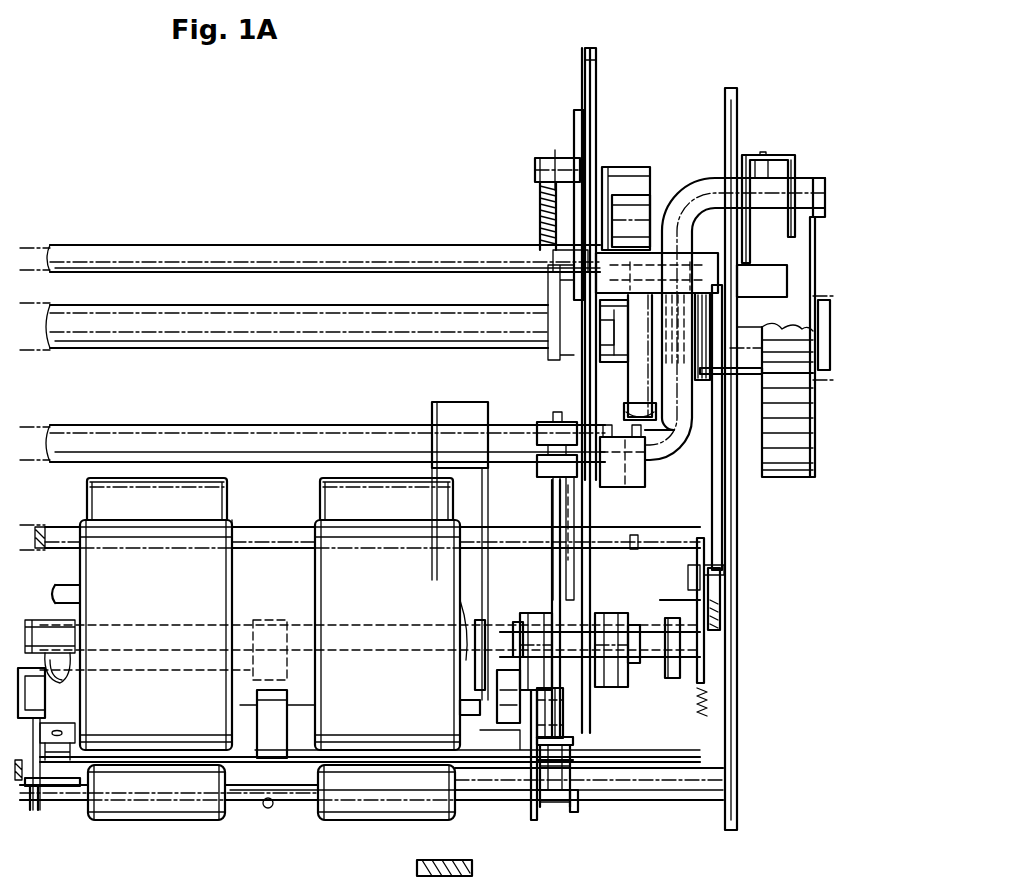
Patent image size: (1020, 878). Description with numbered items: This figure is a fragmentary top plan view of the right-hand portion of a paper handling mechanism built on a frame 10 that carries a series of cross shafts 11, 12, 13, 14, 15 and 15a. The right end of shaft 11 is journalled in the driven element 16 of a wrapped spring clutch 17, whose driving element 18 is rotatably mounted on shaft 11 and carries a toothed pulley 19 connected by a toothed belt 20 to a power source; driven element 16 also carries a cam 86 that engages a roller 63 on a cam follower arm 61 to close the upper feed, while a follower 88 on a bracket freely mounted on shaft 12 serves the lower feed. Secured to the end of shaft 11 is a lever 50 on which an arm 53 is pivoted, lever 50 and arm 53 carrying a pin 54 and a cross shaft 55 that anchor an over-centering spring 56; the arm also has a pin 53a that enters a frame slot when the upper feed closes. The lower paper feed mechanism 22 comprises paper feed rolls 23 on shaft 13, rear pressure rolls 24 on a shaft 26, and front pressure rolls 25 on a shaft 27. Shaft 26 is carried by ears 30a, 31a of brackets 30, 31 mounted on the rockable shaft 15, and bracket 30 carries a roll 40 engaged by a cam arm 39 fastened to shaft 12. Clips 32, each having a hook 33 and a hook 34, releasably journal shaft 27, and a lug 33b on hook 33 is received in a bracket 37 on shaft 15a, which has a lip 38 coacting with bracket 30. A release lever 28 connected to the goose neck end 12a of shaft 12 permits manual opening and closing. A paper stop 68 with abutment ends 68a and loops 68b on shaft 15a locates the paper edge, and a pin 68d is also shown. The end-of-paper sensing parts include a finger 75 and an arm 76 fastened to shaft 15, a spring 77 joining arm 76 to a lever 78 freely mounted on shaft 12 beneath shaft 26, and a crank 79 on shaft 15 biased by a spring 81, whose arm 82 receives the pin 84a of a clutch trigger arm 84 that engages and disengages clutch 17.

The frame 10 is at (735, 714).
The cross shaft 11 is at (395, 315).
The cross shaft 12 is at (359, 428).
The goose neck end 12a is at (704, 185).
The cross shaft 13 is at (44, 600).
The cross shaft 14 is at (722, 604).
The cross shaft 15 is at (660, 655).
The cross shaft 15a is at (672, 790).
The driven element 16 is at (660, 364).
The wrapped spring clutch 17 is at (720, 333).
The driving element 18 is at (754, 370).
The toothed pulley 19 is at (792, 474).
The toothed belt 20 is at (786, 347).
The lower paper feed mechanism 22 is at (236, 517).
The paper feed rolls 23 is at (270, 635).
The rear pressure rolls 24 is at (270, 499).
The front pressure rolls 25 is at (122, 812).
The shaft 26 is at (285, 525).
The shaft 27 is at (484, 790).
The release lever 28 is at (760, 231).
The bracket 30 is at (548, 604).
The ear 30a is at (552, 540).
The bracket 31 is at (622, 612).
The ear 31a is at (638, 540).
The clip 32 is at (42, 805).
The clockwise hook 33 is at (548, 790).
The lug 33b is at (566, 741).
The counterclockwise hook 34 is at (532, 800).
The bracket 37 is at (576, 804).
The lip 38 is at (562, 705).
The cam arm 39 is at (575, 539).
The roll 40 is at (576, 512).
The lever 50 is at (574, 132).
The arm 53 is at (584, 399).
The pin 53a is at (597, 72).
The pin 54 is at (558, 158).
The cross shaft 55 is at (486, 213).
The over-centering spring 56 is at (538, 224).
The cam follower arm 61 is at (618, 172).
The roller 63 is at (640, 208).
The paper stop 68 is at (480, 722).
The abutment end 68a is at (45, 703).
The loops 68b is at (301, 766).
The pin 68d is at (270, 809).
The paper engaging finger 75 is at (298, 710).
The arm 76 is at (478, 640).
The spring 77 is at (468, 702).
The lever 78 is at (486, 473).
The crank 79 is at (688, 612).
The spring 81 is at (700, 700).
The arm 82 is at (696, 556).
The clutch trigger arm 84 is at (719, 500).
The pin 84a is at (688, 583).
The cam 86 is at (632, 376).
The follower 88 is at (648, 420).